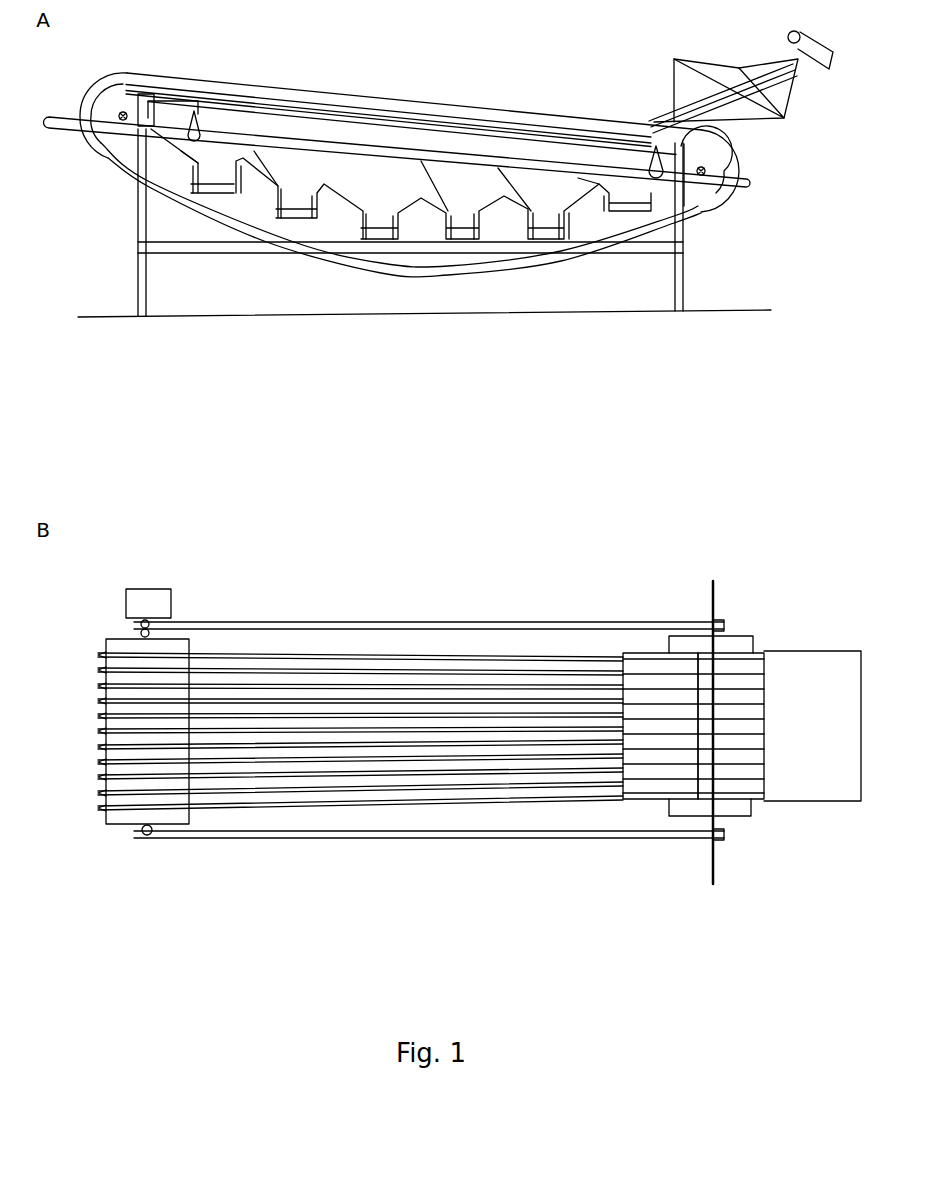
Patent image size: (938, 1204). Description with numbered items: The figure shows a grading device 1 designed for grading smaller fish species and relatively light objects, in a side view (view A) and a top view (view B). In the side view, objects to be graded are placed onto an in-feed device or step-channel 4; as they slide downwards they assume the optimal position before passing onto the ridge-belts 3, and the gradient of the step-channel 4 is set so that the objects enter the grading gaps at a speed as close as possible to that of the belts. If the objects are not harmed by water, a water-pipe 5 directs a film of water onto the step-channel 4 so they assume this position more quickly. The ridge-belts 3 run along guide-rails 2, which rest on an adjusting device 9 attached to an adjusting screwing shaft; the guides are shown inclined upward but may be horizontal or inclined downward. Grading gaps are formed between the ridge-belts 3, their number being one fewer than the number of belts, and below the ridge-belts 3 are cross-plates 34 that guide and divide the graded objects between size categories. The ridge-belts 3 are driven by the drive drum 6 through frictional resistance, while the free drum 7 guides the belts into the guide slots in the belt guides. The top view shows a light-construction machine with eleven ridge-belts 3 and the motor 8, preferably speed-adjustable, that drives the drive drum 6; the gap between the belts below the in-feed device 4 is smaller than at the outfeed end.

The grading device 1 is at (415, 103).
The guide-rails 2 is at (227, 100).
The ridge-belts 3 is at (121, 82).
The in-feed device (step-channel) 4 is at (723, 84).
The water-pipe 5 is at (805, 86).
The drive drum 6 is at (109, 108).
The free drum 7 is at (717, 168).
The motor 8 is at (152, 592).
The adjusting device 9 is at (192, 128).
The cross-plates 34 is at (362, 210).